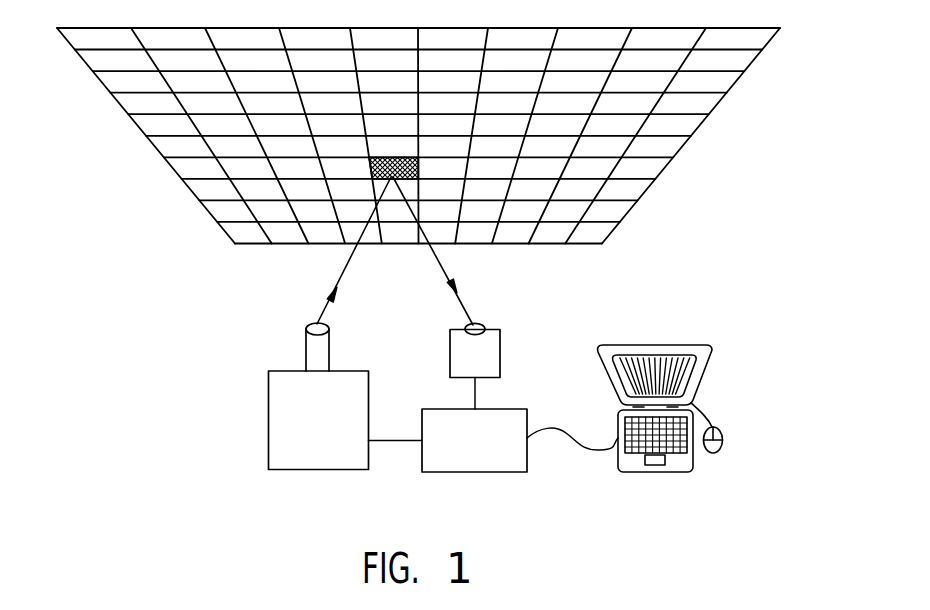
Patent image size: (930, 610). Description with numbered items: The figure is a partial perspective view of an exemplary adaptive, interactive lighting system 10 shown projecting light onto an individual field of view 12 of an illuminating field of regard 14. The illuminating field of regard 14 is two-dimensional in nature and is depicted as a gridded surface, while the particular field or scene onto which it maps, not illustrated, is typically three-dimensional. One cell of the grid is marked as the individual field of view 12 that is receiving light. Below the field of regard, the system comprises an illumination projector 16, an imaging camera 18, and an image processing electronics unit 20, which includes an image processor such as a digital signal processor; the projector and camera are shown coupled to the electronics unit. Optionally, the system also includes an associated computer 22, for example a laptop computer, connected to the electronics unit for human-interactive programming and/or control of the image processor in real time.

The adaptive, interactive lighting system 10 is at (500, 400).
The individual field of view 12 is at (370, 167).
The illuminating field of regard 14 is at (705, 122).
The illumination projector 16 is at (275, 412).
The imaging camera 18 is at (493, 347).
The image processing electronics unit 20 is at (502, 463).
The computer 22 is at (682, 472).